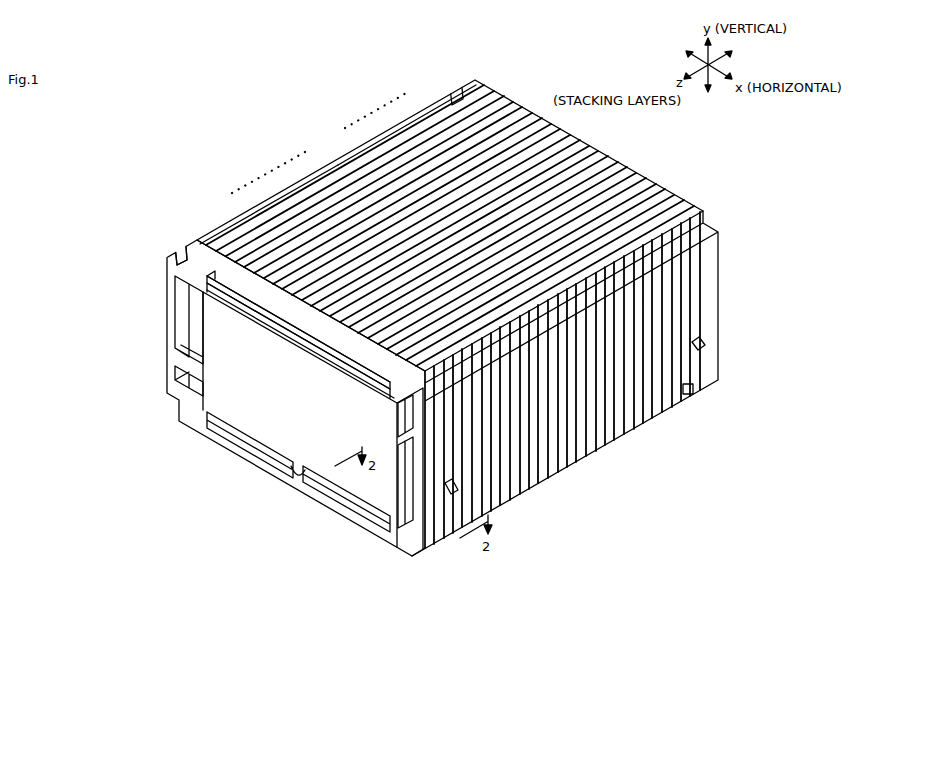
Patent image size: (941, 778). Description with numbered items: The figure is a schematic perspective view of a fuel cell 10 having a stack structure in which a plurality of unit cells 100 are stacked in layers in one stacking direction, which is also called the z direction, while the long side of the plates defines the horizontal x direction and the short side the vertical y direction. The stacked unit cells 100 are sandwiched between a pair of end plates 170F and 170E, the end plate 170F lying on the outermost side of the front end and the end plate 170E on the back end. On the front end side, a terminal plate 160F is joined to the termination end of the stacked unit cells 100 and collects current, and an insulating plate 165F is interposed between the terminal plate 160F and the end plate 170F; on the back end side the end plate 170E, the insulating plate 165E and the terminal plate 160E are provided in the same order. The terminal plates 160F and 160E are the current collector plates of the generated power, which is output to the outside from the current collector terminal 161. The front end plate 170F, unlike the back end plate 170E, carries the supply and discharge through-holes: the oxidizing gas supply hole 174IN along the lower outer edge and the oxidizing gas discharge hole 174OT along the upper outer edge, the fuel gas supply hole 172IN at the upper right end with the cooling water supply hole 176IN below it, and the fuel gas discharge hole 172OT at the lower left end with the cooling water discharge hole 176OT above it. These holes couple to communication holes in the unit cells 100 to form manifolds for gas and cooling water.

The fuel cell 10 is at (170, 94).
The unit cell 100 is at (336, 186).
The terminal plate 160E is at (447, 97).
The insulating plate 165E is at (455, 92).
The end plate 170E is at (480, 84).
The terminal plate 160F is at (205, 243).
The insulating plate 165F is at (184, 257).
The end plate 170F is at (171, 254).
The cooling water discharge hole 176OT is at (185, 318).
The fuel gas discharge hole 172OT is at (180, 379).
The oxidizing gas discharge hole 174OT is at (297, 338).
The oxidizing gas supply hole 174IN is at (362, 492).
The fuel gas supply hole 172IN is at (413, 418).
The cooling water supply hole 176IN is at (405, 458).
The current collector terminal 161 is at (458, 492).